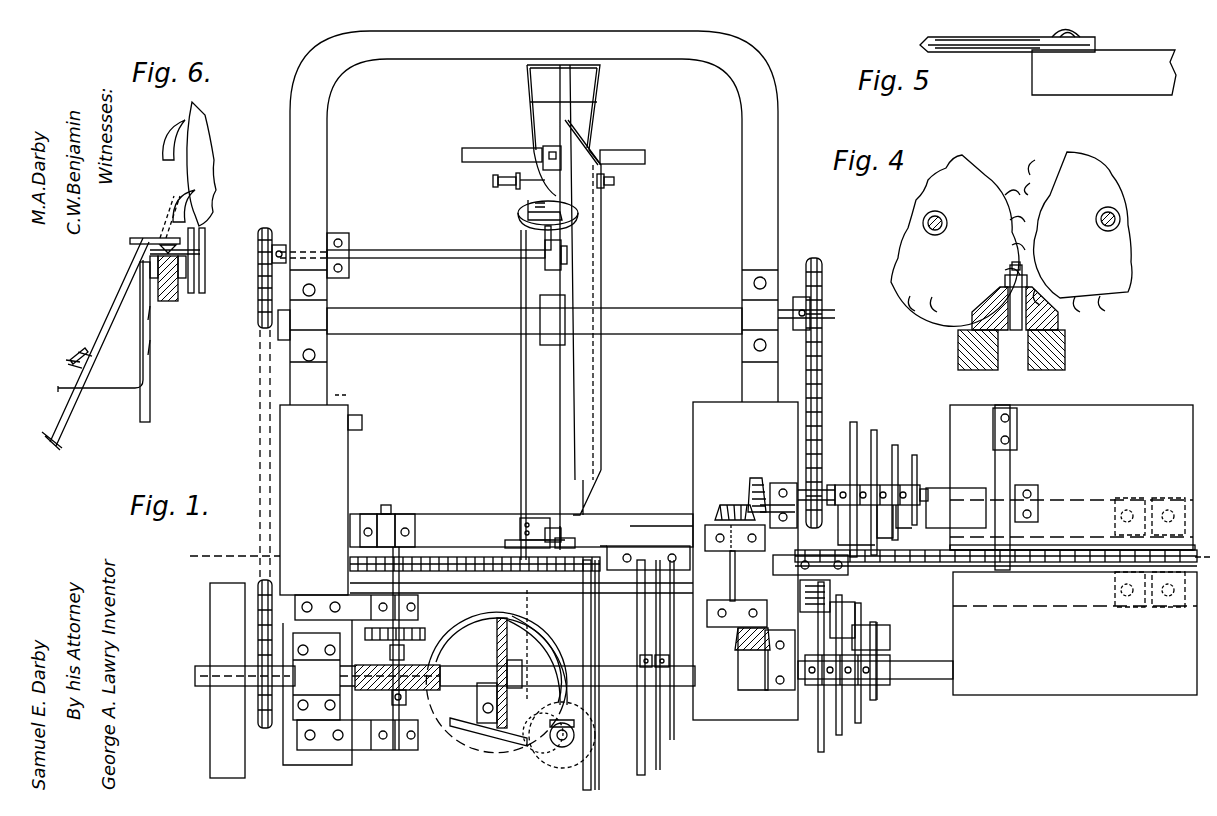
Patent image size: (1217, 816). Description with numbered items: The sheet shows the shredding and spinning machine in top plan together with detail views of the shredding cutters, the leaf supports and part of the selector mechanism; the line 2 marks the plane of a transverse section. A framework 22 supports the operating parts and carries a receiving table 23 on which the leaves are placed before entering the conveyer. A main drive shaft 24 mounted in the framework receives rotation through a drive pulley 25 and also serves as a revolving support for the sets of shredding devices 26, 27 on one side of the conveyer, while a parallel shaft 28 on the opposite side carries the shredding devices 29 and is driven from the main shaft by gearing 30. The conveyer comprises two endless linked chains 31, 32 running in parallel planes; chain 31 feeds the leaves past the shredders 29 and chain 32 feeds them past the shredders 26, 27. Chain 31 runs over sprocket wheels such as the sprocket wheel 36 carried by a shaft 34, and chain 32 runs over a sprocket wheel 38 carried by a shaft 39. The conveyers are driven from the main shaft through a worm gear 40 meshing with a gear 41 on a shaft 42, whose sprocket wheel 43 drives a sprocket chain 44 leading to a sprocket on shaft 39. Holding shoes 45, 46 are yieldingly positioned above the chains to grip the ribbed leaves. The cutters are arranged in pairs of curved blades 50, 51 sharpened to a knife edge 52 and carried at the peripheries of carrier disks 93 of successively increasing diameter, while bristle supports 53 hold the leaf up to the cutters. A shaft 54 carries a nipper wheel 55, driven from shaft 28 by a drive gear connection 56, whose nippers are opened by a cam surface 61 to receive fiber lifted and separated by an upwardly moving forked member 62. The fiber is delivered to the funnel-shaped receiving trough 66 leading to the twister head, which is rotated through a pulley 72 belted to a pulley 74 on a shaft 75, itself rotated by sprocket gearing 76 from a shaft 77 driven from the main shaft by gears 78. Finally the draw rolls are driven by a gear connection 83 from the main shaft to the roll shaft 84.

In FIG. 1, the section line 2 is at (183, 545).
In FIG. 1, the framework 22 is at (752, 720).
In FIG. 1, the receiving table 23 is at (1112, 405).
In FIG. 1, the main drive shaft 24 is at (195, 666).
In FIG. 1, the drive pulley 25 is at (210, 612).
In FIG. 1, the set of shredding devices 26 is at (875, 700).
In FIG. 1, the set of shredding devices 27 is at (595, 790).
In FIG. 1, the shaft 28 is at (722, 500).
In FIG. 1, the shredding devices 29 is at (886, 430).
In FIG. 1, the gearing 30 is at (748, 478).
In FIG. 4, the conveyer chain 31 is at (1030, 282).
In FIG. 1, the conveyer chain 31 is at (978, 566).
In FIG. 6, the conveyer chain 32 is at (185, 280).
In FIG. 1, the conveyer chain 32 is at (472, 556).
In FIG. 1, the shaft 34 is at (1148, 498).
In FIG. 1, the sprocket wheel 36 is at (1118, 576).
In FIG. 1, the sprocket wheel 38 is at (418, 514).
In FIG. 4, the shaft 39 is at (1016, 330).
In FIG. 1, the shaft 39 is at (385, 505).
In FIG. 1, the worm gear 40 is at (396, 667).
In FIG. 1, the gear 41 is at (405, 752).
In FIG. 1, the shaft 42 is at (408, 674).
In FIG. 1, the sprocket wheel 43 is at (422, 628).
In FIG. 1, the sprocket chain 44 is at (495, 620).
In FIG. 6, the holding shoe 45 is at (160, 238).
In FIG. 4, the holding shoe 45 is at (1018, 262).
In FIG. 1, the holding shoe 45 is at (1035, 566).
In FIG. 1, the holding shoe 46 is at (608, 546).
In FIG. 5, the blade 50 is at (1020, 55).
In FIG. 5, the blade 51 is at (1020, 37).
In FIG. 5, the knife edge 52 is at (920, 45).
In FIG. 4, the bristle supports 53 is at (975, 310).
In FIG. 1, the shaft 54 is at (664, 320).
In FIG. 1, the nipper wheel 55 is at (520, 370).
In FIG. 1, the drive gear connection 56 is at (826, 380).
In FIG. 1, the cam surface 61 is at (538, 518).
In FIG. 6, the forked member 62 is at (108, 308).
In FIG. 1, the receiving trough 66 is at (598, 88).
In FIG. 1, the pulley 72 is at (520, 214).
In FIG. 1, the pulley 74 is at (558, 766).
In FIG. 1, the shaft 75 is at (540, 752).
In FIG. 1, the sprocket gearing 76 is at (548, 655).
In FIG. 1, the shaft 77 is at (475, 730).
In FIG. 1, the gears 78 is at (497, 642).
In FIG. 1, the gear connection 83 is at (252, 398).
In FIG. 1, the shaft 84 is at (452, 259).
In FIG. 1, the carrier disks 93 is at (666, 770).